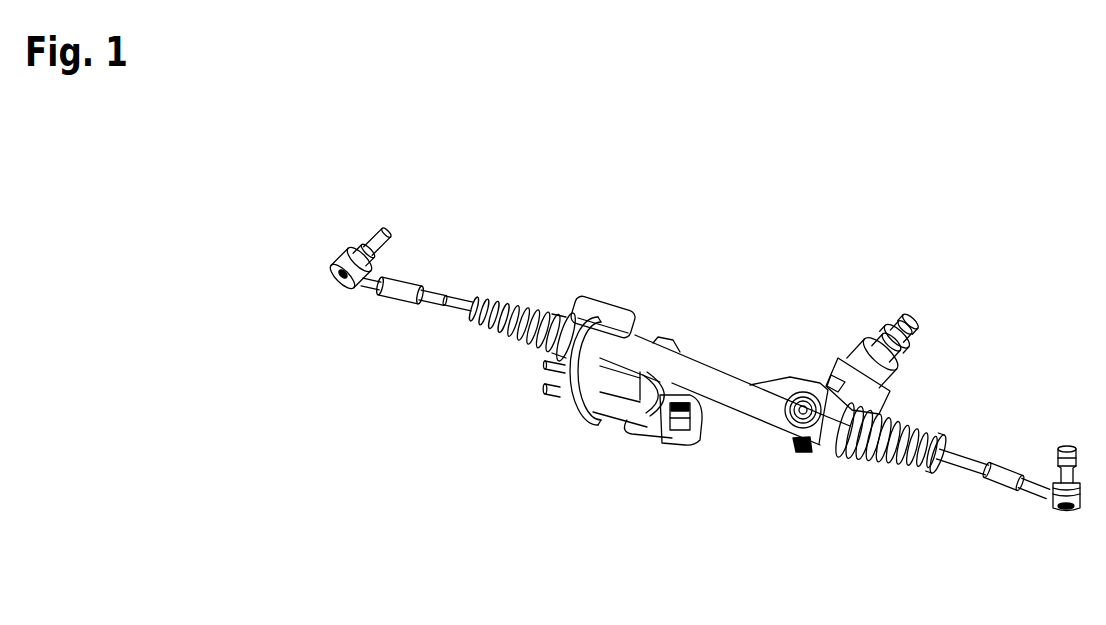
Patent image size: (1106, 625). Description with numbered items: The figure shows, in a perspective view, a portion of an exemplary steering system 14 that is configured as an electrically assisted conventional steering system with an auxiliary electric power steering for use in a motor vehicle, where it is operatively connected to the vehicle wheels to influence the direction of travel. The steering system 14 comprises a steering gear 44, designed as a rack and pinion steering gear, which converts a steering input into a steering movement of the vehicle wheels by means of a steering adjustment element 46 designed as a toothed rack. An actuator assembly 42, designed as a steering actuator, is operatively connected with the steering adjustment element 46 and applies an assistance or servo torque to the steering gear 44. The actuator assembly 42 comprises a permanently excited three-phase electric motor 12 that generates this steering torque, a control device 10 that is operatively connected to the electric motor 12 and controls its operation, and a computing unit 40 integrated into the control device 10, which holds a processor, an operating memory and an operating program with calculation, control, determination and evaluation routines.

The control device 10 is at (665, 463).
The electric motor 12 is at (540, 454).
The steering system 14 is at (966, 258).
The computing unit 40 is at (704, 445).
The actuator assembly 42 is at (589, 503).
The steering gear 44 is at (856, 298).
The steering adjustment element 46 is at (466, 302).